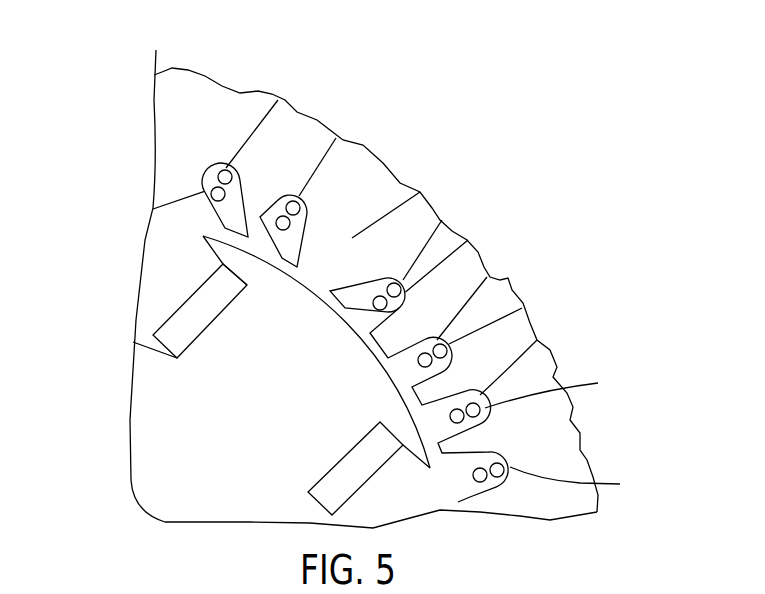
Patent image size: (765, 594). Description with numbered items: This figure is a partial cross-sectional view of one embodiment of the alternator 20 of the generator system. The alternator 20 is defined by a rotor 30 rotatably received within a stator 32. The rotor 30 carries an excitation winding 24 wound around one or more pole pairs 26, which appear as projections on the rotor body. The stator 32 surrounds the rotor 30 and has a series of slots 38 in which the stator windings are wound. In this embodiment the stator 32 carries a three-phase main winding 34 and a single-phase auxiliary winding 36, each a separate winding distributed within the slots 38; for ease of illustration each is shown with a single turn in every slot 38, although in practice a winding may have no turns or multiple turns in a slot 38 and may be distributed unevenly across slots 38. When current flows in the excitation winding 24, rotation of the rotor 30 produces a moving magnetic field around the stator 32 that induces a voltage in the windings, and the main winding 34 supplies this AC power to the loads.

The alternator 20 is at (547, 126).
The excitation winding 24 is at (205, 320).
The pole pair 26 is at (236, 459).
The rotor 30 is at (162, 470).
The stator 32 is at (552, 435).
The three-phase main winding 34 is at (291, 200).
The single-phase auxiliary winding 36 is at (225, 194).
The slot 38 is at (228, 166).